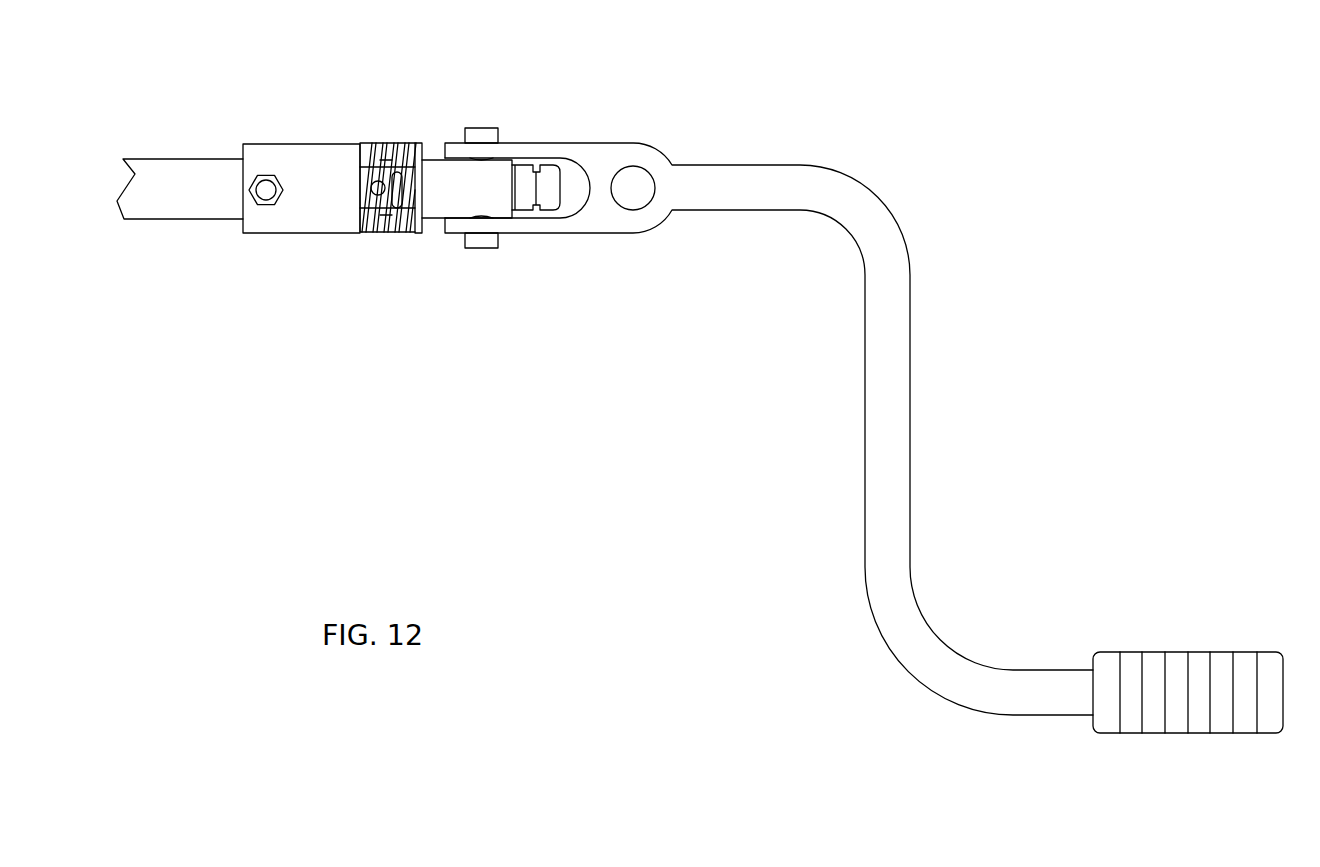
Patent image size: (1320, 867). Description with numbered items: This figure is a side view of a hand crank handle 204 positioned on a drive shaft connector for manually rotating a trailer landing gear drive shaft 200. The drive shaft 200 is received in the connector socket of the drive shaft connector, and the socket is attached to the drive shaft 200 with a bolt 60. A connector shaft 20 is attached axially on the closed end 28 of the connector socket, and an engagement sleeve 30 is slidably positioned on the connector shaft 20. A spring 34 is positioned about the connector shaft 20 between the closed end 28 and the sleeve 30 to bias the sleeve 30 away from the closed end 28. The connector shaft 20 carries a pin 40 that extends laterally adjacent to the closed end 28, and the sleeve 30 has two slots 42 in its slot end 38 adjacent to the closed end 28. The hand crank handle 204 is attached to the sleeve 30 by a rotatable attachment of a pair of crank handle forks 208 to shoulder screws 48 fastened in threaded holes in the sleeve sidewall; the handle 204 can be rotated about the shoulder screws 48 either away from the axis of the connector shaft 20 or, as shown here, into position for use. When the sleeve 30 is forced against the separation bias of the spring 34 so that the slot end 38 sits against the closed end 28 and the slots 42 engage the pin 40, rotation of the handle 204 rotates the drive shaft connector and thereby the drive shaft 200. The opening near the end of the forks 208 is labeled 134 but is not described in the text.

The trailer drive shaft 200 is at (183, 159).
The bolt 60 is at (266, 167).
The closed end 28 is at (373, 170).
The pin 40 is at (388, 165).
The spring 34 is at (383, 233).
The slots 42 is at (397, 232).
The slot end 38 is at (412, 145).
The engagement sleeve 30 is at (436, 207).
The connector shaft 20 is at (560, 207).
The shoulder screws 48 is at (483, 128).
The crank handle forks 208 is at (535, 143).
The pivot hole 134 is at (652, 170).
The hand crank handle 204 is at (1200, 650).